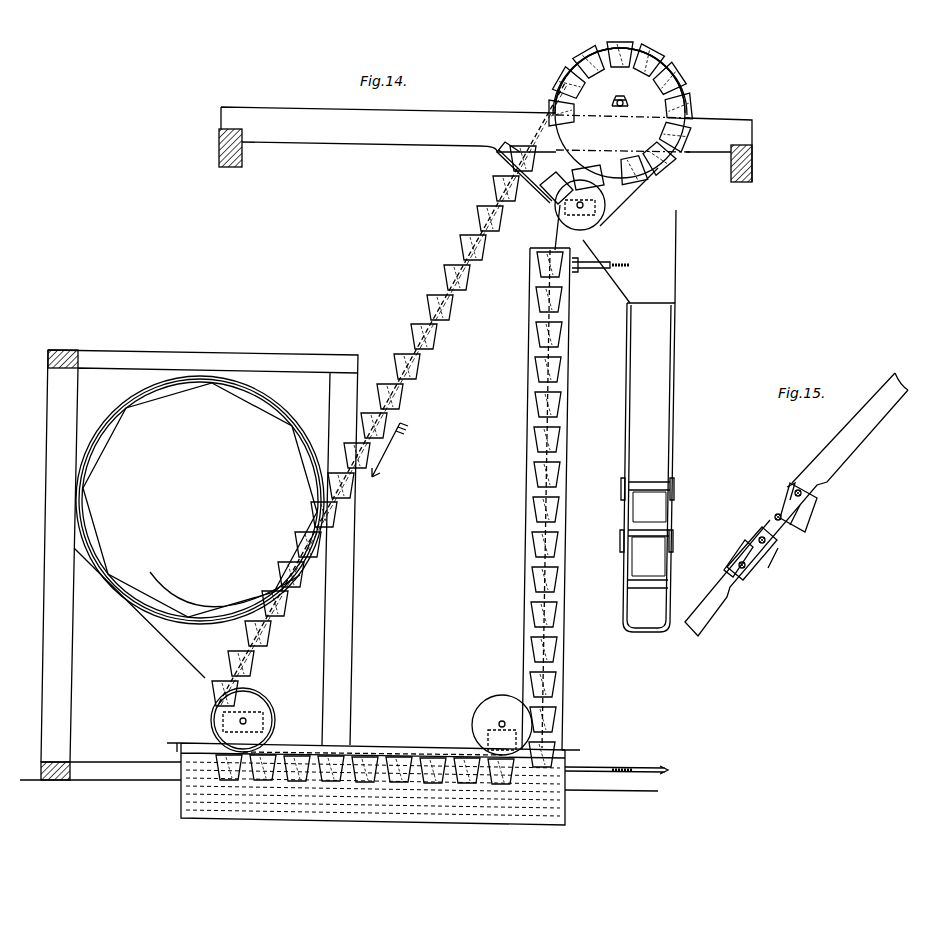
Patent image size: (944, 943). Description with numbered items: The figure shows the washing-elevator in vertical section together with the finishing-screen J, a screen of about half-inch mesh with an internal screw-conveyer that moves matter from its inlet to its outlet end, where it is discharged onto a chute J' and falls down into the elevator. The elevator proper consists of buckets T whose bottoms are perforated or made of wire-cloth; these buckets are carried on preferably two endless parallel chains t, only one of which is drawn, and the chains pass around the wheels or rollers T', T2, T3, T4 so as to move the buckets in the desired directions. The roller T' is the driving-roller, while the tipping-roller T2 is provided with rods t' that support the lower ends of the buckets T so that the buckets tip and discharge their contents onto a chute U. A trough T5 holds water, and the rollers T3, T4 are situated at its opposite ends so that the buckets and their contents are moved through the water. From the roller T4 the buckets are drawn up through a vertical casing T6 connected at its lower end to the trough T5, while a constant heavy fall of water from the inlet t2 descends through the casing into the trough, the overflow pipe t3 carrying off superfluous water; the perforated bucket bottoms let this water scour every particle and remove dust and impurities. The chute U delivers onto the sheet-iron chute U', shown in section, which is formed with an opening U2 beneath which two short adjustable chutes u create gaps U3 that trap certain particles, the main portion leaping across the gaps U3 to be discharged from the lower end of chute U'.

In FIG. 14, the driving-roller T' is at (623, 111).
In FIG. 14, the buckets T is at (457, 413).
In FIG. 14, the endless parallel chains t is at (393, 419).
In FIG. 14, the rods t' is at (577, 200).
In FIG. 14, the tipping-roller T2 is at (610, 198).
In FIG. 14, the inlet t2 is at (608, 272).
In FIG. 14, the vertical casing T6 is at (530, 325).
In FIG. 14, the chute U is at (629, 256).
In FIG. 14, the chute U' is at (654, 476).
In FIG. 15, the chute U' is at (792, 508).
In FIG. 15, the opening U2 is at (808, 480).
In FIG. 14, the gaps U3 is at (628, 483).
In FIG. 15, the gaps U3 is at (822, 480).
In FIG. 14, the short adjustable chutes u is at (649, 534).
In FIG. 15, the short adjustable chutes u is at (786, 536).
In FIG. 14, the roller T3 is at (262, 705).
In FIG. 14, the roller T4 is at (502, 725).
In FIG. 14, the trough T5 is at (420, 752).
In FIG. 14, the overflow pipe t3 is at (598, 770).
In FIG. 14, the finishing-screen J is at (200, 500).
In FIG. 14, the chute J' is at (139, 613).